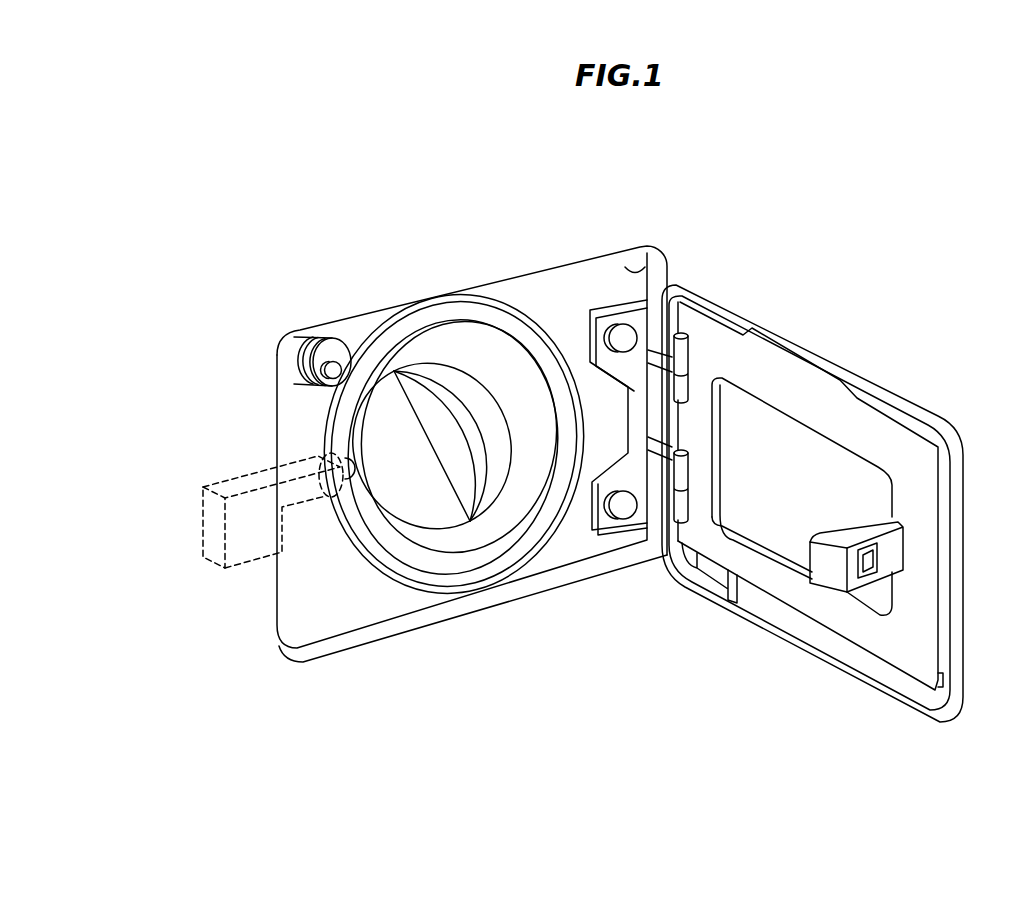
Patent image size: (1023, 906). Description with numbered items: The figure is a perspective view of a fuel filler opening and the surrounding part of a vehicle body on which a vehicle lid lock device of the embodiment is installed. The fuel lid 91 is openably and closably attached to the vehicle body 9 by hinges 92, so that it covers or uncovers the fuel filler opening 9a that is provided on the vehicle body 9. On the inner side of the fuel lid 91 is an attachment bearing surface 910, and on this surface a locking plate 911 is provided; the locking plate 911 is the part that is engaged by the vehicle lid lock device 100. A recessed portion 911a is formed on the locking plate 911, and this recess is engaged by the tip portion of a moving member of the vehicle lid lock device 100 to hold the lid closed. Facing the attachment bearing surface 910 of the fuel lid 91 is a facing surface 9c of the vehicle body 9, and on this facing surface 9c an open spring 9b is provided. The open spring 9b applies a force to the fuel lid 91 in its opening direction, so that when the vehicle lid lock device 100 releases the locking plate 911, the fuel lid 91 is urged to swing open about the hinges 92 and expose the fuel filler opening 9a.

The vehicle body 9 is at (432, 618).
The fuel filler opening 9a is at (310, 639).
The open spring 9b is at (333, 355).
The facing surface 9c is at (652, 256).
The fuel lid 91 is at (942, 402).
The hinges 92 is at (683, 500).
The attachment bearing surface 910 is at (907, 650).
The locking plate 911 is at (827, 572).
The recessed portion 911a is at (870, 565).
The vehicle lid lock device 100 is at (202, 472).